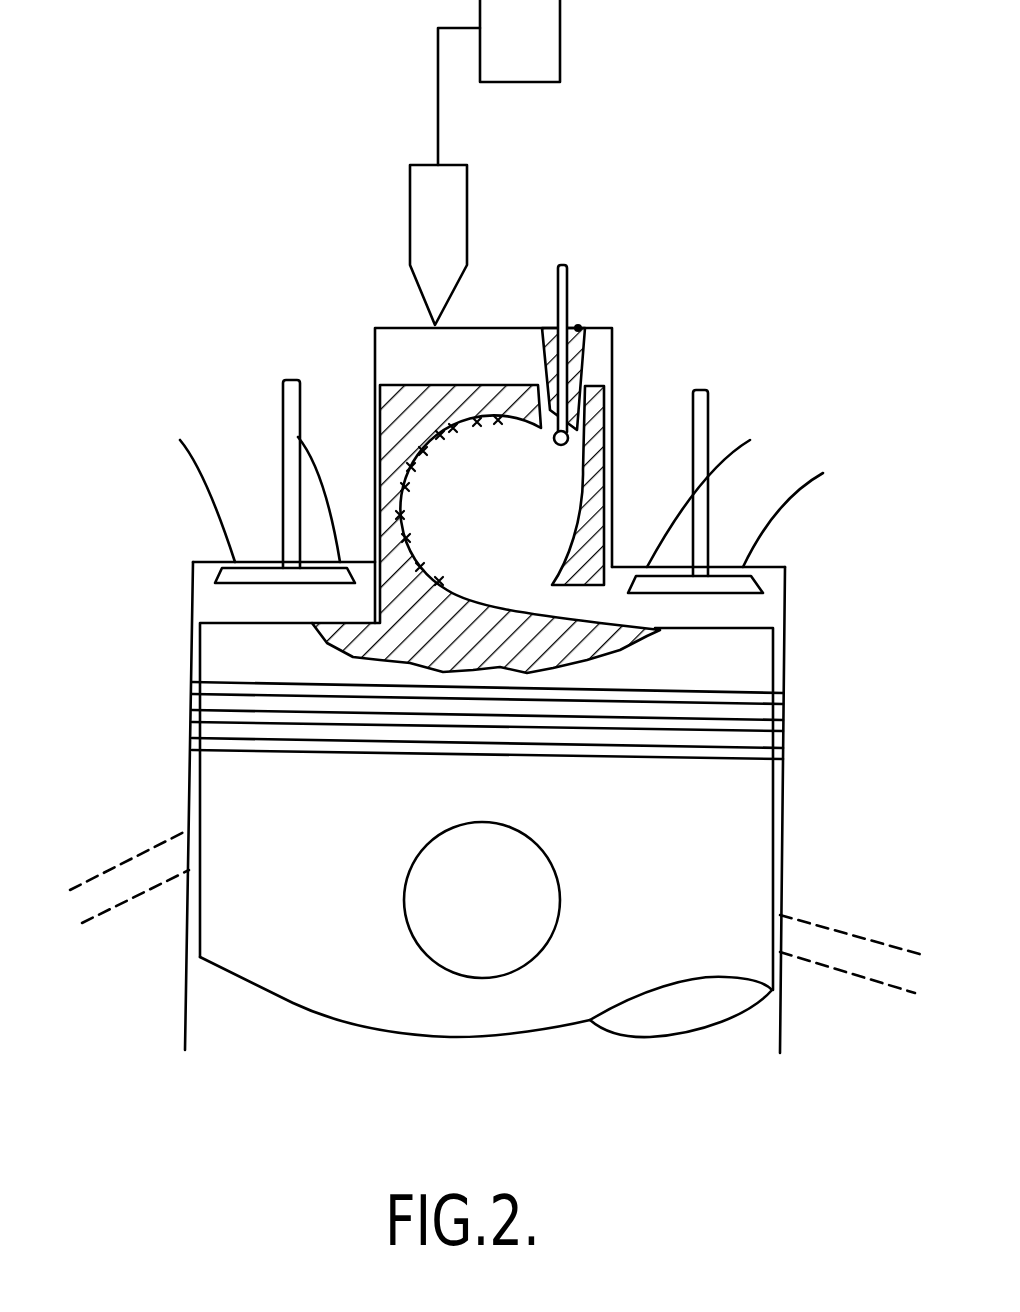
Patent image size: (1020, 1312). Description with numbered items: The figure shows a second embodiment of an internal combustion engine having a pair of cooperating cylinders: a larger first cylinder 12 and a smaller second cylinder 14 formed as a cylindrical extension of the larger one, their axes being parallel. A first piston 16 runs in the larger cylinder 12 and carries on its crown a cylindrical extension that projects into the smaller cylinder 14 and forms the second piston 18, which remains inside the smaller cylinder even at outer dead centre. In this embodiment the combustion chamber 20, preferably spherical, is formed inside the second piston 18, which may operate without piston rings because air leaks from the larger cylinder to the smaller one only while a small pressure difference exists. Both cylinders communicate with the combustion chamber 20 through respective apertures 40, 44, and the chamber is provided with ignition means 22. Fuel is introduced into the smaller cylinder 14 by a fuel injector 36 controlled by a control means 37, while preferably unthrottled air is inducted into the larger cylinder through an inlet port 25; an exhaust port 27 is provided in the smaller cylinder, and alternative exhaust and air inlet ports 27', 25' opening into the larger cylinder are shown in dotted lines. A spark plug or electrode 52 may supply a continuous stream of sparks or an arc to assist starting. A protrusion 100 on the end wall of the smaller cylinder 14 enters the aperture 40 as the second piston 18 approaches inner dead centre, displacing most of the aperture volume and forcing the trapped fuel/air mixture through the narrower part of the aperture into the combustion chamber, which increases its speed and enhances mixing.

The first cylinder 12 is at (770, 597).
The second cylinder 14 is at (395, 327).
The first piston 16 is at (728, 655).
The second piston 18 is at (418, 402).
The combustion chamber 20 is at (433, 512).
The ignition means 22 is at (422, 452).
The inlet port 25 is at (752, 491).
The air inlet port 25' is at (851, 983).
The exhaust port 27 is at (241, 481).
The exhaust port 27' is at (129, 860).
The fuel injector 36 is at (423, 208).
The control means 37 is at (540, 48).
The aperture 40 is at (558, 461).
The aperture 44 is at (567, 607).
The spark plug or electrode 52 is at (569, 287).
The protrusion 100 is at (548, 392).